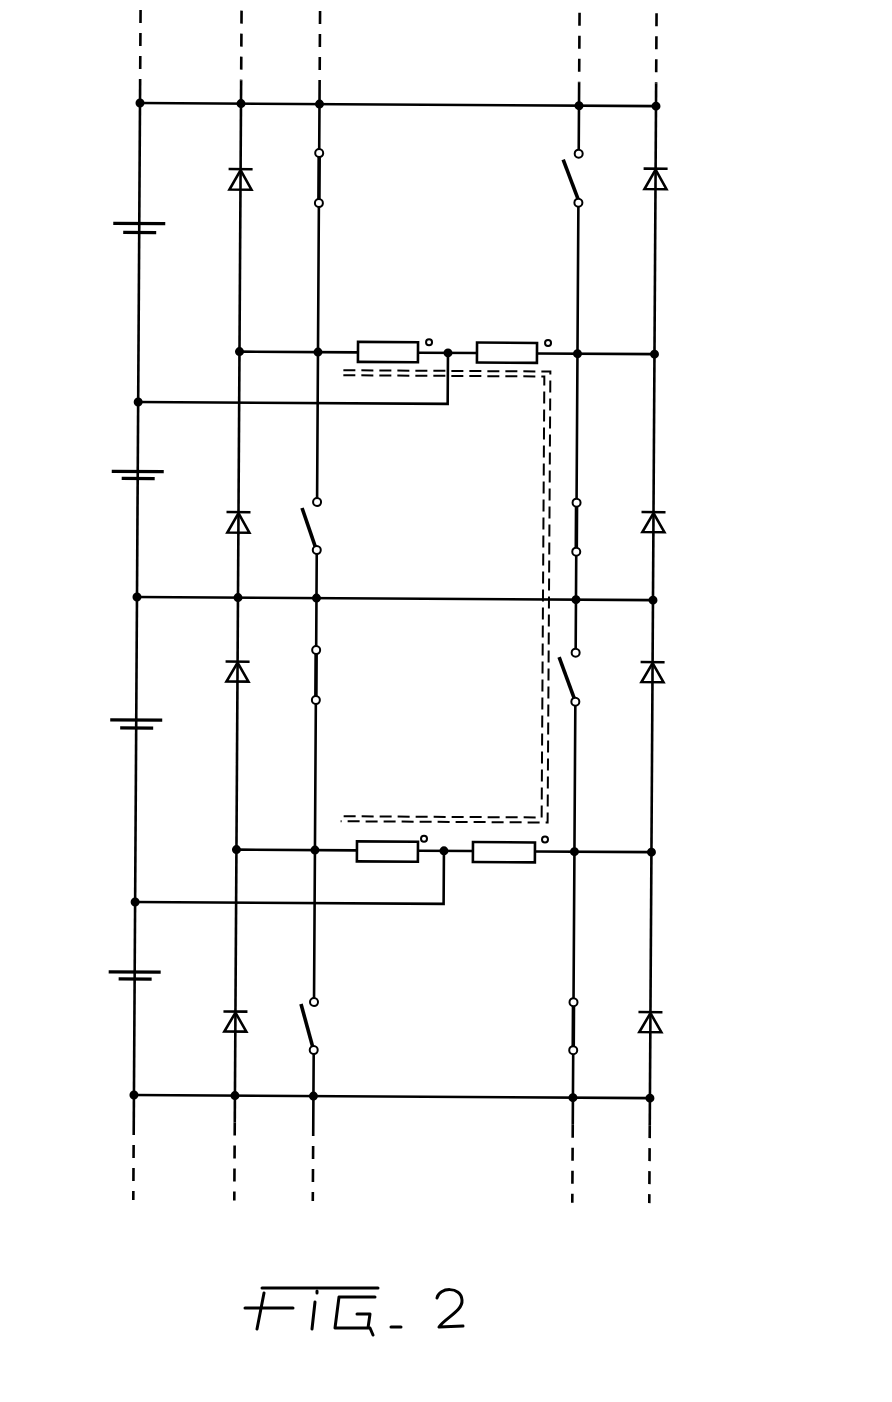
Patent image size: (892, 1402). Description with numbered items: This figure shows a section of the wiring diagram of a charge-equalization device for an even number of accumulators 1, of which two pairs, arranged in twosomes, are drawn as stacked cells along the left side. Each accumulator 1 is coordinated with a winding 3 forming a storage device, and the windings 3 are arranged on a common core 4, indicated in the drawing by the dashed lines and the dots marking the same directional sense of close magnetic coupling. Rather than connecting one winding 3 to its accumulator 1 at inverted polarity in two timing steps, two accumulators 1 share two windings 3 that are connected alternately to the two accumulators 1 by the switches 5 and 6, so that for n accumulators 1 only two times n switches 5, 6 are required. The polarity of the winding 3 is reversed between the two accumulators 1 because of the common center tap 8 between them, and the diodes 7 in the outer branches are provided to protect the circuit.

The accumulator 1 is at (134, 234).
The winding 3 is at (497, 340).
The core 4 is at (487, 376).
The switch 5 is at (321, 178).
The switch 6 is at (564, 162).
The diode 7 is at (669, 170).
The center tap 8 is at (182, 402).